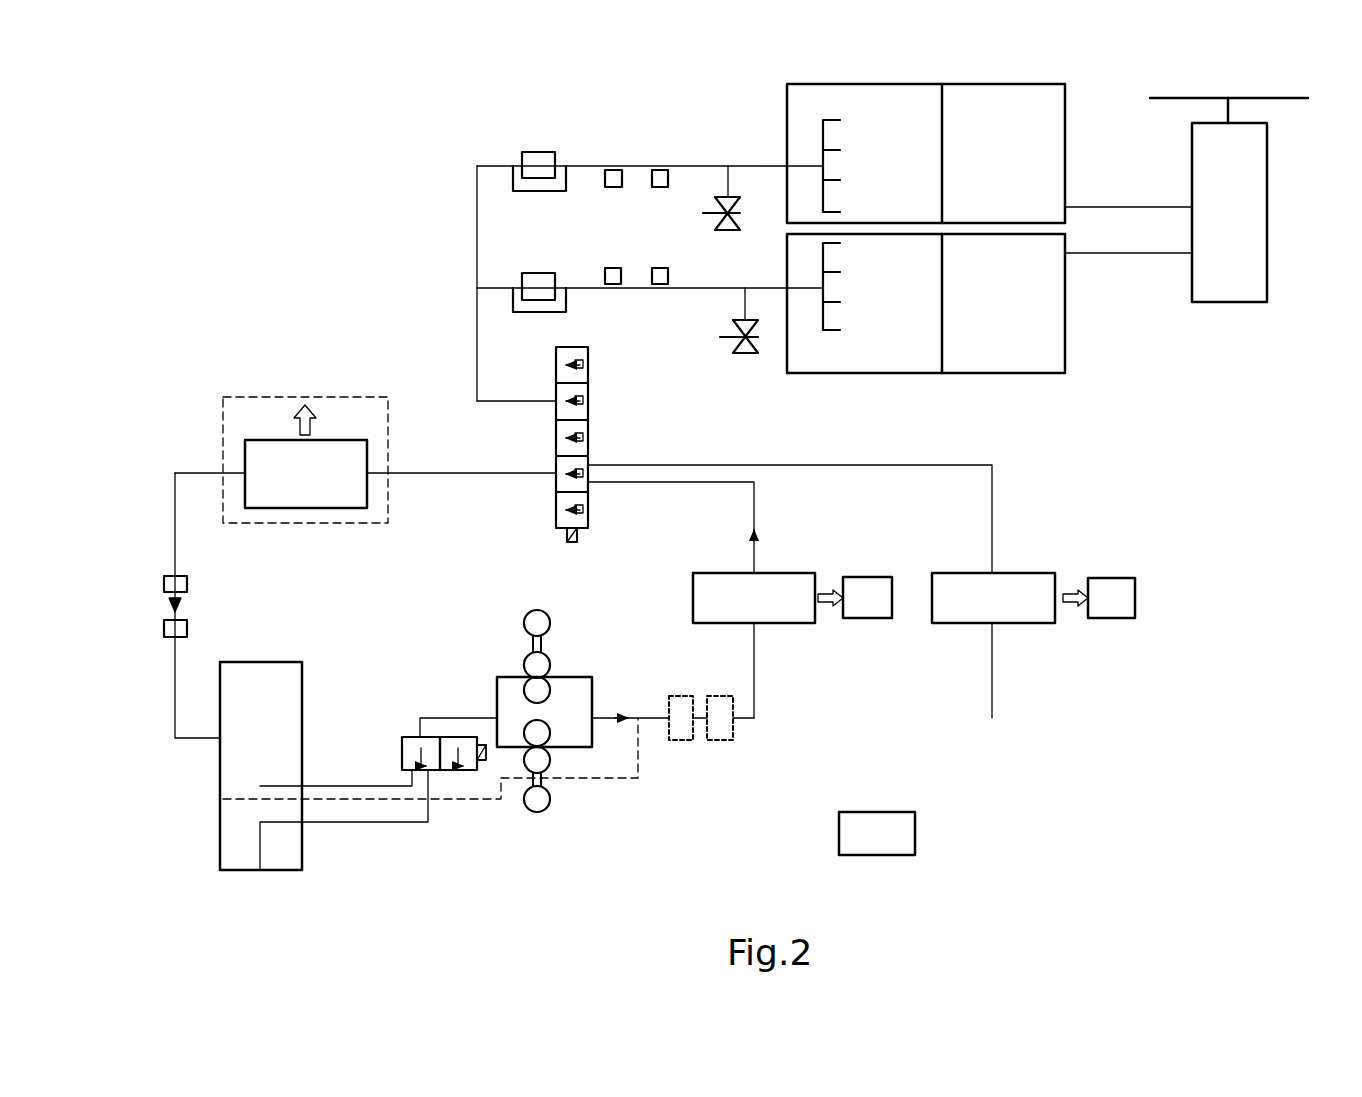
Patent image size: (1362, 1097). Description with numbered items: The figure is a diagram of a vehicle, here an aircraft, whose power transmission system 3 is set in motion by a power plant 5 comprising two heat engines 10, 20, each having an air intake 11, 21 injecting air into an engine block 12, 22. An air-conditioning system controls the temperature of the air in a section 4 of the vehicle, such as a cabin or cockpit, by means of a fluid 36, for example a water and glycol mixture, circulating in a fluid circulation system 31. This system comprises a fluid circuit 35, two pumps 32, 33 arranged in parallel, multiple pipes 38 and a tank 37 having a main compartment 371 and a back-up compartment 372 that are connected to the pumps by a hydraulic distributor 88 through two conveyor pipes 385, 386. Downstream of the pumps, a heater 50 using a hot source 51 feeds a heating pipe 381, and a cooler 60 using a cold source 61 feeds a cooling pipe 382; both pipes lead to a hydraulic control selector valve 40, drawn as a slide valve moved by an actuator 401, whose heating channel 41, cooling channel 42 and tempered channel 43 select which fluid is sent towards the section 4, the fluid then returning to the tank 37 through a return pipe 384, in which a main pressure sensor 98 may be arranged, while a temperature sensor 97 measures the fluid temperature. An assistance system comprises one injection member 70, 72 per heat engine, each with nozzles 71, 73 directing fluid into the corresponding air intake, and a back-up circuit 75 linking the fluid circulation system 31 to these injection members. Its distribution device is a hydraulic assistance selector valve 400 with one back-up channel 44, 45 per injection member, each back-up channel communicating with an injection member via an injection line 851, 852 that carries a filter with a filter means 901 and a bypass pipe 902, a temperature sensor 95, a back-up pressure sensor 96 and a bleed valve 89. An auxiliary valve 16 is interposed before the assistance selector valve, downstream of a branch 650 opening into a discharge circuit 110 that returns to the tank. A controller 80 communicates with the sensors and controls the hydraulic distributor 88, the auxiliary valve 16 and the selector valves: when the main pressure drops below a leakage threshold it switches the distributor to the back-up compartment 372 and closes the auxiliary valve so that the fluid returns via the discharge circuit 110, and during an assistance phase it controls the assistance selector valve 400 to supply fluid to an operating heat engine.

The power transmission system 3 is at (1323, 290).
The section of the vehicle 4 is at (278, 397).
The power plant 5 is at (1094, 190).
The heat engine 10 is at (962, 153).
The air intake 11 is at (901, 115).
The engine block 12 is at (1026, 115).
The auxiliary valve 16 is at (683, 696).
The heat engine 20 is at (975, 327).
The air intake 21 is at (901, 265).
The engine block 22 is at (1026, 265).
The fluid circulation system 31 is at (561, 748).
The pump 32 is at (540, 812).
The pump 33 is at (524, 623).
The fluid circuit 35 is at (247, 784).
The fluid 36 is at (246, 734).
The tank 37 is at (253, 886).
The pipes 38 is at (871, 591).
The heating pipe 381 is at (758, 551).
The cooling pipe 382 is at (992, 524).
The hydraulic control selector valve 40 is at (564, 495).
The heating channel 41 is at (606, 518).
The cooling channel 42 is at (606, 491).
The tempered channel 43 is at (612, 438).
The back-up channel 44 is at (612, 405).
The back-up channel 45 is at (612, 371).
The heater 50 is at (740, 615).
The hot source 51 is at (853, 610).
The cooler 60 is at (979, 615).
The cold source 61 is at (1097, 610).
The injection member 70 is at (856, 176).
The nozzle 71 is at (838, 150).
The injection member 72 is at (858, 327).
The nozzle 73 is at (854, 251).
The back-up circuit 75 is at (607, 251).
The controller 80 is at (863, 845).
The hydraulic distributor 88 is at (467, 820).
The bleed valve 89 is at (700, 236).
The temperature sensor 95 is at (668, 178).
The back-up pressure sensor 96 is at (622, 178).
The temperature sensor 97 is at (164, 584).
The main pressure sensor 98 is at (187, 629).
The discharge circuit 110 is at (600, 794).
The main compartment 371 is at (220, 768).
The back-up compartment 372 is at (290, 872).
The return pipe 384 is at (175, 703).
The conveyor pipe 385 is at (352, 787).
The conveyor pipe 386 is at (405, 822).
The hydraulic assistance selector valve 400 is at (720, 740).
The actuator 401 is at (568, 542).
The branch 650 is at (658, 750).
The injection line 851 is at (477, 244).
The injection line 852 is at (707, 288).
The filter means 901 is at (537, 152).
The bypass pipe 902 is at (537, 192).